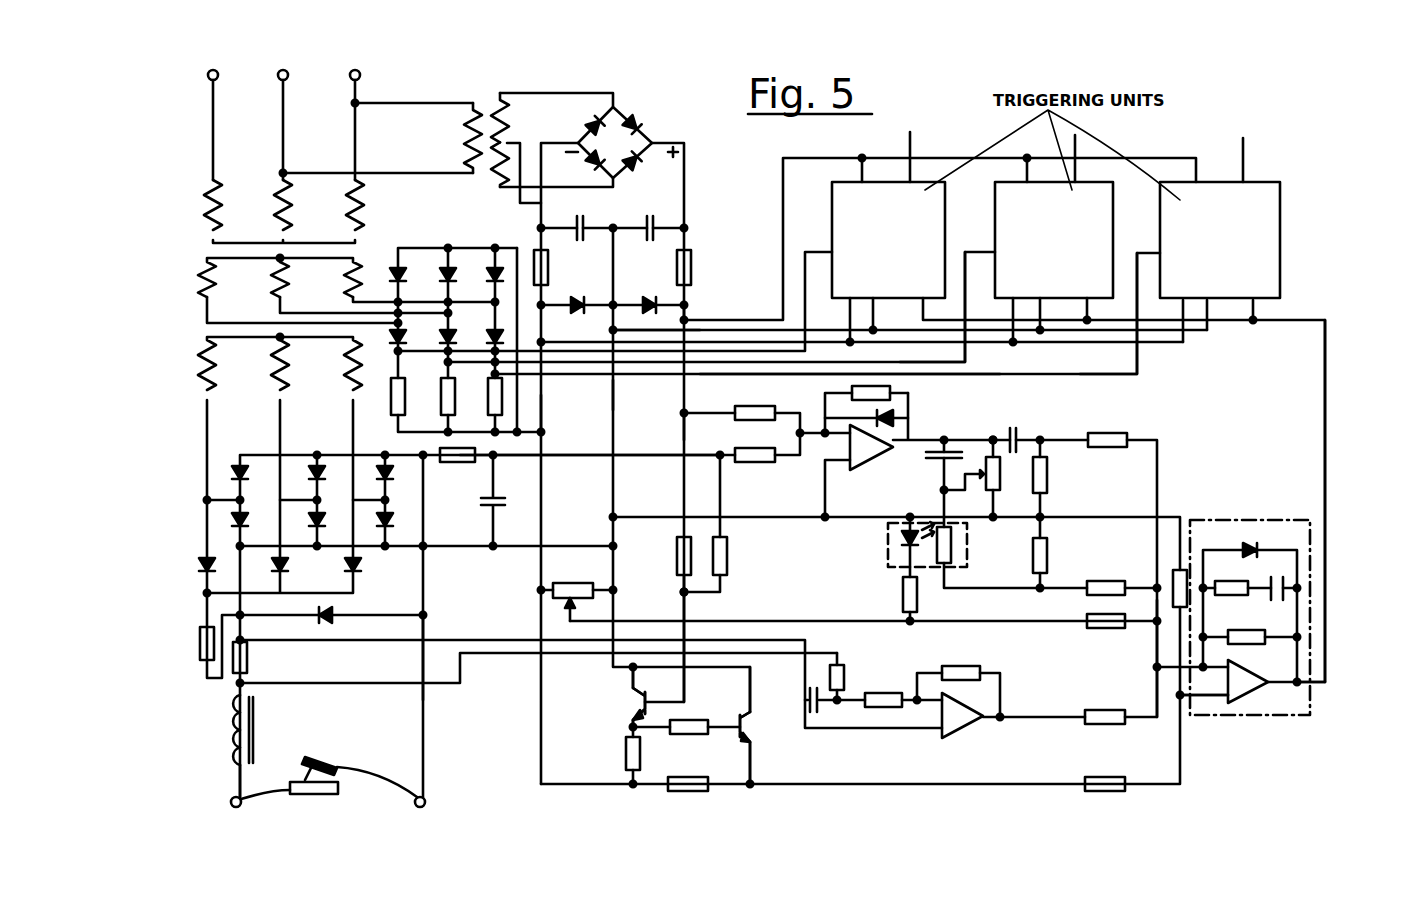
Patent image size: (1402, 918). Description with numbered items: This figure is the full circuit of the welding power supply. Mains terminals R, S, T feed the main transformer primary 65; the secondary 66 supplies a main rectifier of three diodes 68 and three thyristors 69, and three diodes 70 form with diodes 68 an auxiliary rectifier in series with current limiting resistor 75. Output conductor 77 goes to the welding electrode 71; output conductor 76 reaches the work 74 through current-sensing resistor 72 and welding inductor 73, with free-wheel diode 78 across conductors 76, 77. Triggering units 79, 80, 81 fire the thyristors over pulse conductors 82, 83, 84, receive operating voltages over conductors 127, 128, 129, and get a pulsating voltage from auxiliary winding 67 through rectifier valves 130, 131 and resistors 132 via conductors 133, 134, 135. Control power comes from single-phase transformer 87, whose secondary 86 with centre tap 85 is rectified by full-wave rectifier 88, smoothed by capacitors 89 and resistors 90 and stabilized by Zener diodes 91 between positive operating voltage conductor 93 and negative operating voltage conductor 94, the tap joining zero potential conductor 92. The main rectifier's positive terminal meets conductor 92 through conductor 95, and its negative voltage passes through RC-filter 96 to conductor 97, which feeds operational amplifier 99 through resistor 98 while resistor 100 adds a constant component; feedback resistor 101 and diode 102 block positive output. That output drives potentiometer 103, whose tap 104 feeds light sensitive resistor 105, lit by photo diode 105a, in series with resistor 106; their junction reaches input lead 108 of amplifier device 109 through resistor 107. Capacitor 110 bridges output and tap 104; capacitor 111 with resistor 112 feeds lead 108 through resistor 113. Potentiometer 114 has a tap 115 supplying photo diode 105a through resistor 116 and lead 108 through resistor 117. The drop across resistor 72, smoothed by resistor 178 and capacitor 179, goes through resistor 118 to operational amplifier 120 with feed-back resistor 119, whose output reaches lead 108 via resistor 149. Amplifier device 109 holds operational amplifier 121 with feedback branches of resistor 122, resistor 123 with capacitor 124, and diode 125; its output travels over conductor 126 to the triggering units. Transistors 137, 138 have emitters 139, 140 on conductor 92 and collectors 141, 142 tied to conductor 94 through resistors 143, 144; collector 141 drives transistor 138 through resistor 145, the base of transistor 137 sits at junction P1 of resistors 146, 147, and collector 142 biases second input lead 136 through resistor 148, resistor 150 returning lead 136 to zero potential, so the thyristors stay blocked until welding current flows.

The phase R terminal R is at (225, 125).
The phase S terminal S is at (295, 125).
The phase T terminal T is at (367, 125).
The primary 65 is at (220, 188).
The secondary 66 is at (272, 380).
The auxiliary winding 67 is at (272, 275).
The diodes 68 is at (378, 465).
The thyristors 69 is at (388, 530).
The diodes 70 is at (217, 568).
The welding electrode 71 is at (318, 765).
The resistor 72 is at (250, 660).
The welding inductor 73 is at (262, 725).
The work 74 is at (318, 796).
The current limiting resistor 75 is at (200, 665).
The output conductor 76 is at (238, 602).
The output conductor 77 is at (426, 613).
The free-wheel diode 78 is at (334, 613).
The triggering unit 79 is at (830, 212).
The triggering unit 80 is at (993, 212).
The triggering unit 81 is at (1158, 212).
The triggering pulse conductor 82 is at (913, 142).
The triggering pulse conductor 83 is at (1077, 144).
The triggering pulse conductor 84 is at (1245, 144).
The centre tap 85 is at (504, 138).
The secondary 86 is at (494, 172).
The single-phase transformer 87 is at (482, 105).
The full-wave rectifier 88 is at (630, 142).
The capacitors 89 is at (590, 222).
The resistors 90 is at (549, 268).
The Zener diodes 91 is at (650, 298).
The zero potential conductor 92 is at (616, 395).
The positive operating voltage conductor 93 is at (682, 426).
The negative operating voltage conductor 94 is at (544, 416).
The conductor 95 is at (480, 506).
The smoothing RC-filter 96 is at (458, 463).
The conductor 97 is at (576, 458).
The resistor 98 is at (755, 463).
The operational amplifier 99 is at (866, 462).
The resistor 100 is at (753, 406).
The resistor 101 is at (885, 390).
The diode 102 is at (900, 418).
The potentiometer 103 is at (994, 436).
The tap 104 is at (962, 478).
The light sensitive resistor 105 is at (952, 545).
The photo diode 105a is at (900, 540).
The resistor 106 is at (1048, 553).
The resistor 107 is at (1108, 583).
The input lead 108 is at (1156, 667).
The amplifier device 109 is at (1210, 718).
The capacitor 110 is at (934, 460).
The capacitor 111 is at (1018, 430).
The resistor 112 is at (1048, 474).
The resistor 113 is at (1112, 432).
The potentiometer 114 is at (590, 582).
The tap 115 is at (560, 610).
The resistor 116 is at (900, 596).
The resistor 117 is at (1090, 629).
The series resistor 118 is at (890, 690).
The feed-back resistor 119 is at (976, 660).
The operational amplifier 120 is at (968, 724).
The operational amplifier 121 is at (1250, 697).
The resistor 122 is at (1268, 632).
The resistor 123 is at (1232, 580).
The capacitor 124 is at (1282, 577).
The diode 125 is at (1250, 542).
The conductor 126 is at (1323, 418).
The conductor 127 is at (775, 322).
The conductor 128 is at (612, 340).
The conductor 129 is at (770, 320).
The rectifier valves 130 is at (493, 270).
The rectifier valves 131 is at (403, 330).
The resistor 132 is at (490, 395).
The conductor 133 is at (825, 376).
The conductor 134 is at (967, 364).
The conductor 135 is at (1138, 364).
The second input lead 136 is at (1178, 694).
The transistor 137 is at (642, 701).
The transistor 138 is at (752, 737).
The emitter 139 is at (632, 690).
The emitter 140 is at (748, 708).
The collector 141 is at (632, 714).
The collector 142 is at (752, 760).
The resistor 143 is at (624, 752).
The resistor 144 is at (666, 790).
The resistor 145 is at (688, 733).
The resistor 146 is at (678, 553).
The resistor 147 is at (727, 560).
The resistor 148 is at (1085, 792).
The resistor 149 is at (1105, 725).
The resistor 150 is at (1176, 568).
The resistor 178 is at (846, 668).
The capacitor 179 is at (822, 708).
The junction P1 is at (681, 593).